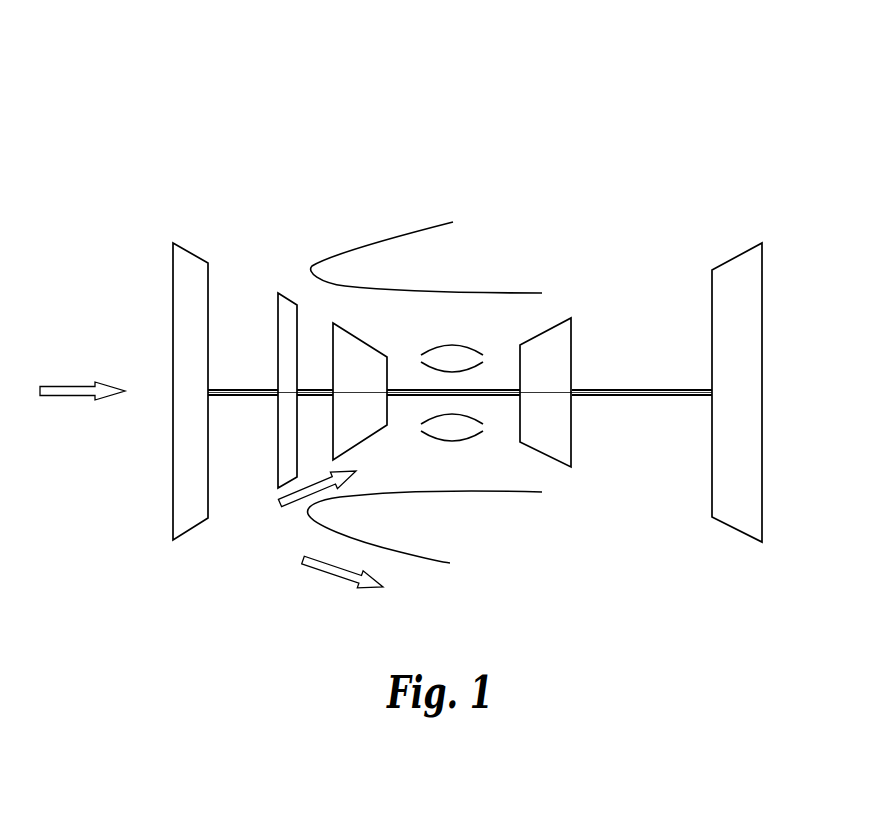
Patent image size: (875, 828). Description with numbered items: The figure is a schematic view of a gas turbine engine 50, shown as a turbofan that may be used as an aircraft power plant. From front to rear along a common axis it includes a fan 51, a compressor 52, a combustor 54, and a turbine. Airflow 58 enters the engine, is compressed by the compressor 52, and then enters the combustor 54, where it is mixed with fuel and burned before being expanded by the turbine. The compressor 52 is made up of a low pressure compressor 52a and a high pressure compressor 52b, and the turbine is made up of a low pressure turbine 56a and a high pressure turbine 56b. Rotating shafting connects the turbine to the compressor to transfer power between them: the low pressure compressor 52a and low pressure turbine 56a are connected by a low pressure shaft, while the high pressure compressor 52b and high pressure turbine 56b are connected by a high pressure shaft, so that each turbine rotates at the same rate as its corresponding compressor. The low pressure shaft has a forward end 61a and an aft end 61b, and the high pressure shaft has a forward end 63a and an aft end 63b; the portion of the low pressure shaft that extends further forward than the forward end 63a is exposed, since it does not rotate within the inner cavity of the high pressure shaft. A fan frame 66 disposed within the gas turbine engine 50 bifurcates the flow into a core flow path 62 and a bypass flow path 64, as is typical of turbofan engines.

The gas turbine engine 50 is at (548, 82).
The fan 51 is at (193, 232).
The compressor 52 is at (268, 185).
The low pressure compressor 52a is at (277, 320).
The high pressure compressor 52b is at (368, 325).
The combustor 54 is at (475, 327).
The low pressure turbine 56a is at (748, 218).
The high pressure turbine 56b is at (567, 305).
The airflow 58 is at (60, 396).
The forward end 61a is at (210, 398).
The aft end 61b is at (705, 402).
The core flow path 62 is at (283, 507).
The forward end 63a is at (392, 378).
The aft end 63b is at (515, 405).
The bypass flow path 64 is at (330, 573).
The fan frame 66 is at (362, 242).